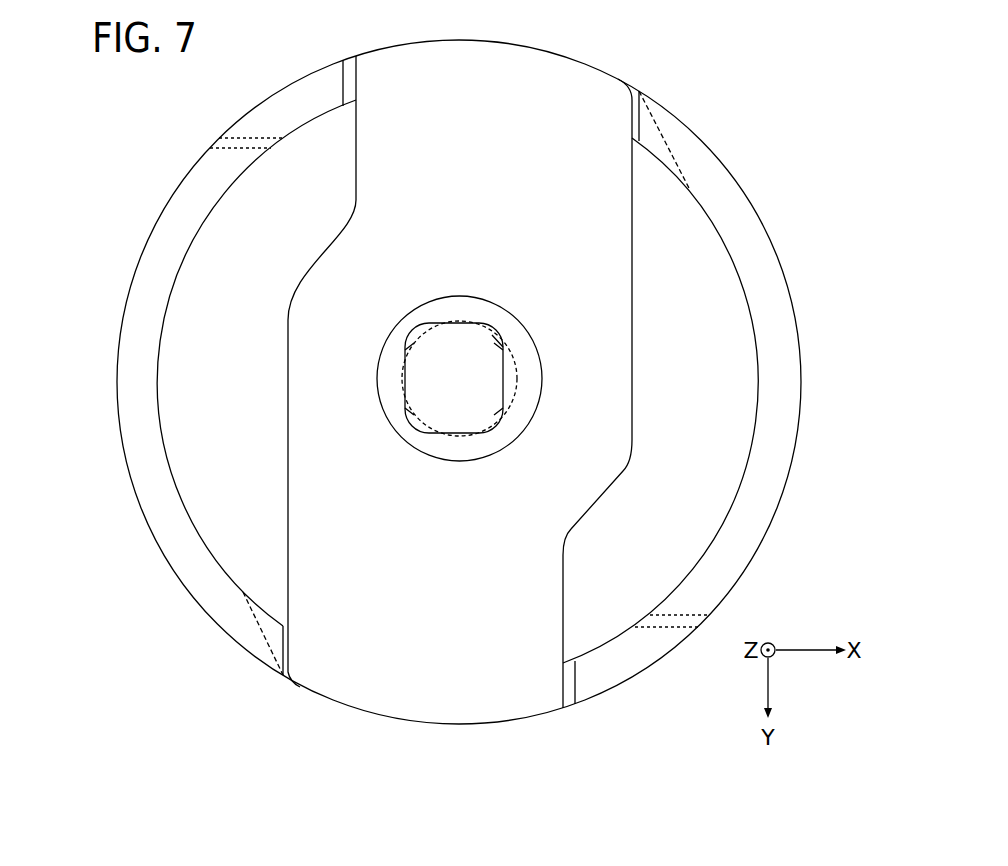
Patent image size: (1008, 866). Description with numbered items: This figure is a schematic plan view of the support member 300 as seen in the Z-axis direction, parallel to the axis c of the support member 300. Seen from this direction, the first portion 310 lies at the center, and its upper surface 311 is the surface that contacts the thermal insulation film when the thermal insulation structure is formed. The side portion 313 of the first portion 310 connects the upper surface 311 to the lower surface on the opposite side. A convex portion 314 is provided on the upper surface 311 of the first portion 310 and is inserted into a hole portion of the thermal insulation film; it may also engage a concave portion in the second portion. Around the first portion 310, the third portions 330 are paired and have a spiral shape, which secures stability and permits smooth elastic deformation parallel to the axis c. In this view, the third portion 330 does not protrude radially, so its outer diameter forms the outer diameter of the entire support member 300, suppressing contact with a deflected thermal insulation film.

The support member 300 is at (760, 127).
The first portion 310 is at (593, 505).
The upper surface 311 is at (515, 690).
The side portion 313 is at (632, 202).
The convex portion 314 is at (380, 318).
The third portion 330 is at (147, 293).